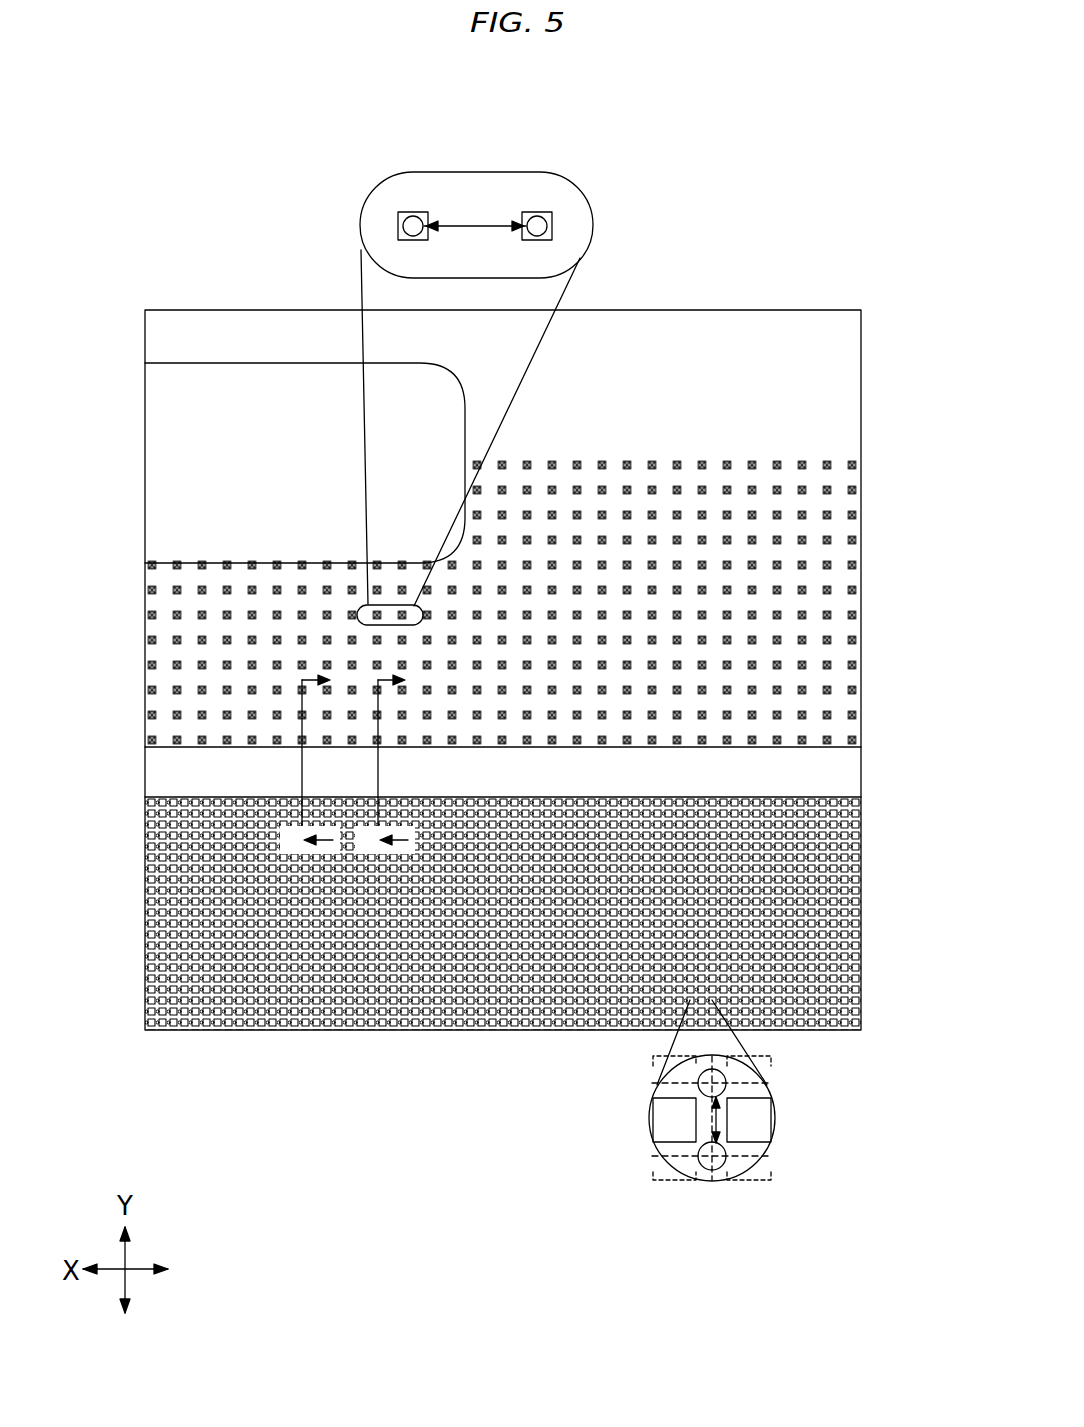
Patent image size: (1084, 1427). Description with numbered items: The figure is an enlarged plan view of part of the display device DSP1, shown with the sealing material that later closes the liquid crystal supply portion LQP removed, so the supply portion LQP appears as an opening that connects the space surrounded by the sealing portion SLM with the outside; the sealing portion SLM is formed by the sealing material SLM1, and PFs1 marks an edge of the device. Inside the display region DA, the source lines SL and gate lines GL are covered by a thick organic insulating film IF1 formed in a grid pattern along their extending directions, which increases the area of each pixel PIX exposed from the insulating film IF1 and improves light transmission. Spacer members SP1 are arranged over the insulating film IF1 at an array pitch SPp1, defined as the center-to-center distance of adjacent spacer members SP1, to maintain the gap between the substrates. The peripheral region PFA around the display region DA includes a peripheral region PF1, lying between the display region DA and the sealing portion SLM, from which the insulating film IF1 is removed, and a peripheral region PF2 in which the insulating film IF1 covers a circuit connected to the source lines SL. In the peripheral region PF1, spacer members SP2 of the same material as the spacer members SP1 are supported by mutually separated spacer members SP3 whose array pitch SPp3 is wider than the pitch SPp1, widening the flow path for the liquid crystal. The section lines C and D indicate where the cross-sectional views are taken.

The display device DSP1 is at (716, 246).
The protective film PFs1 is at (268, 309).
The sealing material SLM1 is at (203, 385).
The sealing portion SLM is at (145, 363).
The peripheral region PF1 is at (145, 563).
The peripheral region PF2 is at (145, 747).
The display region DA is at (145, 797).
The liquid crystal supply portion LQP is at (861, 363).
The peripheral region PFA is at (861, 1030).
The insulating film IF1 is at (830, 1030).
The spacer member SP3 is at (410, 212).
The spacer member SP2 is at (398, 224).
The array pitch SPp3 is at (478, 224).
The line C- C is at (310, 762).
The line D- D is at (385, 762).
The pixel PIX is at (657, 1112).
The source line SL is at (712, 1182).
The gate line GL is at (745, 1083).
The spacer member SP1 is at (698, 1078).
The array pitch SPp1 is at (722, 1120).